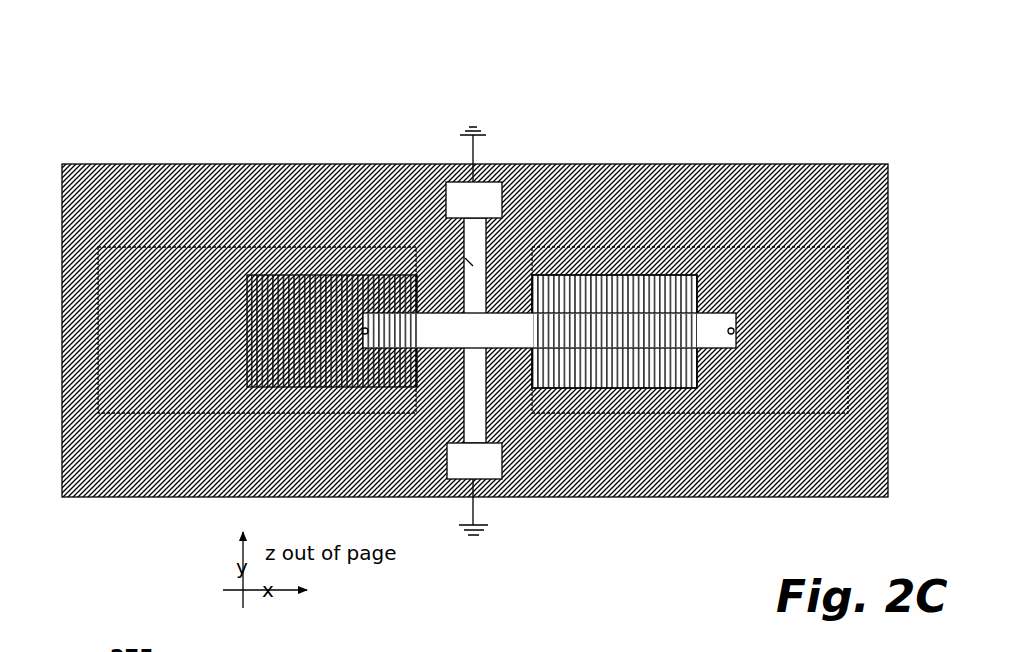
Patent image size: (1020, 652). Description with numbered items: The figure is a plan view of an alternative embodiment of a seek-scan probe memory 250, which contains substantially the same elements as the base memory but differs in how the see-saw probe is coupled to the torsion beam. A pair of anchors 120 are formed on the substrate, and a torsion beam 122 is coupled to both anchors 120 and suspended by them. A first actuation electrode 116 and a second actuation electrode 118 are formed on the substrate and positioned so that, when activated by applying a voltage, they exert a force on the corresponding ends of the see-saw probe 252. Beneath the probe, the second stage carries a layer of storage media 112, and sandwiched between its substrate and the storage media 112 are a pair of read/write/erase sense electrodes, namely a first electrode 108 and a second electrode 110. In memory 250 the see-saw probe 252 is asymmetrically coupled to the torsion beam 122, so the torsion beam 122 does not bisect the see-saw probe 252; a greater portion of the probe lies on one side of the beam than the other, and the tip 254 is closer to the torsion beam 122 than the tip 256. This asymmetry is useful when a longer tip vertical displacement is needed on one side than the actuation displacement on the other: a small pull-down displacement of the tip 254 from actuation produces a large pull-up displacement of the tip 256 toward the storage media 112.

The SSP memory 250 is at (492, 311).
The first electrode 108 is at (148, 250).
The second electrode 110 is at (828, 255).
The storage media 112 is at (265, 490).
The first actuation electrode 116 is at (278, 378).
The second actuation electrode 118 is at (647, 375).
The anchors 120 is at (494, 190).
The torsion beam 122 is at (446, 238).
The see-saw probe 252 is at (549, 330).
The tip 254 is at (365, 327).
The tip 256 is at (733, 327).